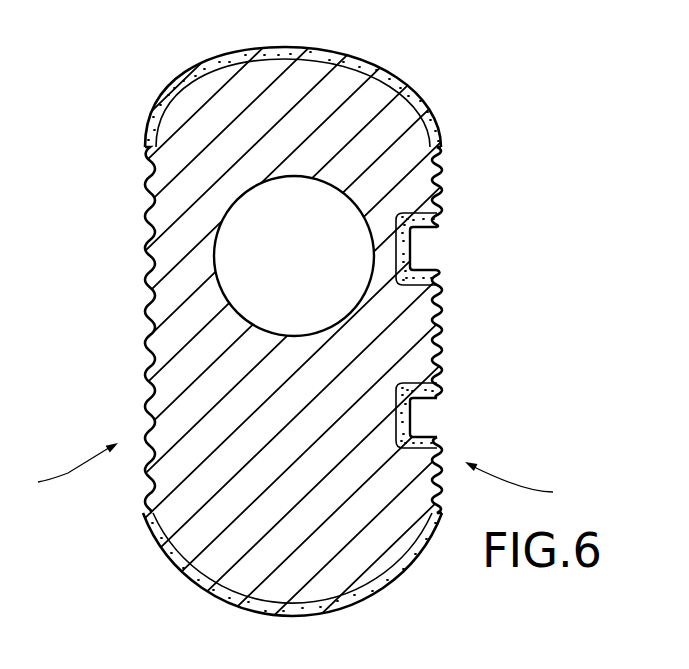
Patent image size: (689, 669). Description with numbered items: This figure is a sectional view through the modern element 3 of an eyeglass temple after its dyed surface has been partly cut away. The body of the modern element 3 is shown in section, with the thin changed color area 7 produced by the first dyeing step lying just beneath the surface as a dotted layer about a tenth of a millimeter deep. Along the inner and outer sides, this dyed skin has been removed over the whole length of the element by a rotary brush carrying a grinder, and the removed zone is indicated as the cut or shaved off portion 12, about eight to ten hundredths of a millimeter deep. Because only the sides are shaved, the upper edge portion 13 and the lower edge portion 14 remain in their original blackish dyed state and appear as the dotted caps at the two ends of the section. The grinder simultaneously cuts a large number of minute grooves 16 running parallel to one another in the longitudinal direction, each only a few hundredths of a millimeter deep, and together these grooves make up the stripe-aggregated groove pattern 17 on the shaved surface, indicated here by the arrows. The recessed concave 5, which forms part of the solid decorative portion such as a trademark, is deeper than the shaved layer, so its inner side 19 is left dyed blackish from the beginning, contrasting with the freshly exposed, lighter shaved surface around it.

The implant body 3 is at (177, 468).
The concaved portion 5 is at (422, 258).
The changed color area 7 is at (420, 100).
The cut or shaved off portion 12 is at (148, 346).
The upper edge portion 13 is at (390, 73).
The lower edge portion 14 is at (396, 588).
The minute grooves 16 is at (148, 283).
The stripe-aggregated groove pattern 17 is at (295, 476).
The inner side of the concave 19 is at (432, 240).